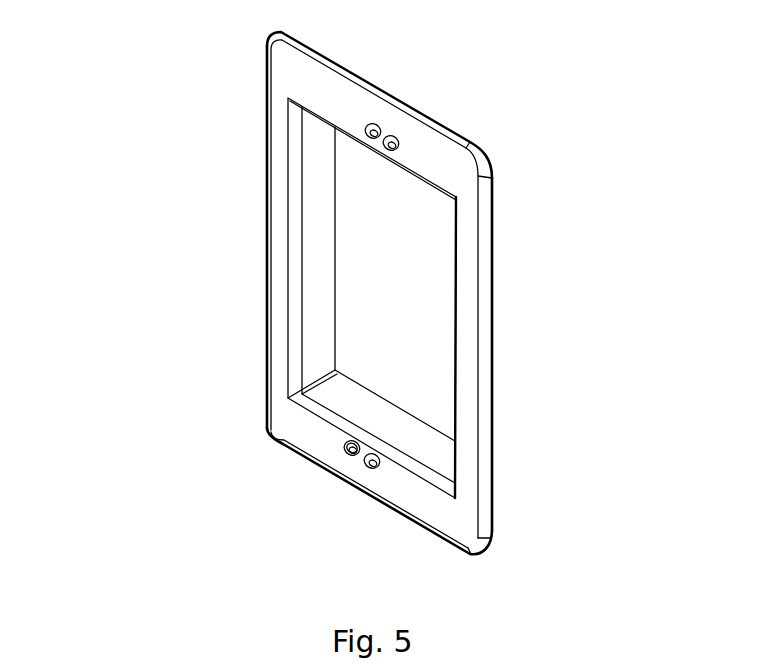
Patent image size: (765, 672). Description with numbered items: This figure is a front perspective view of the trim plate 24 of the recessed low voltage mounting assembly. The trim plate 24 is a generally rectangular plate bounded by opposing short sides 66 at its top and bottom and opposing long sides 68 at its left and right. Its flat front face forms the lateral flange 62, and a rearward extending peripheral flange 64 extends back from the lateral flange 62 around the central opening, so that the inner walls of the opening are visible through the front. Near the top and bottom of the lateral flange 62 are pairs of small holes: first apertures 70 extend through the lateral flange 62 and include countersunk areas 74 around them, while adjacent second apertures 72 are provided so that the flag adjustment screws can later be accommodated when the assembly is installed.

The trim plate 24 is at (178, 80).
The lateral flange 62 is at (309, 90).
The rearward extending peripheral flange 64 is at (361, 408).
The opposing short sides 66 is at (381, 91).
The opposing long sides 68 is at (266, 229).
The first apertures 70 is at (390, 153).
The second apertures 72 is at (371, 140).
The countersunk areas 74 is at (345, 447).